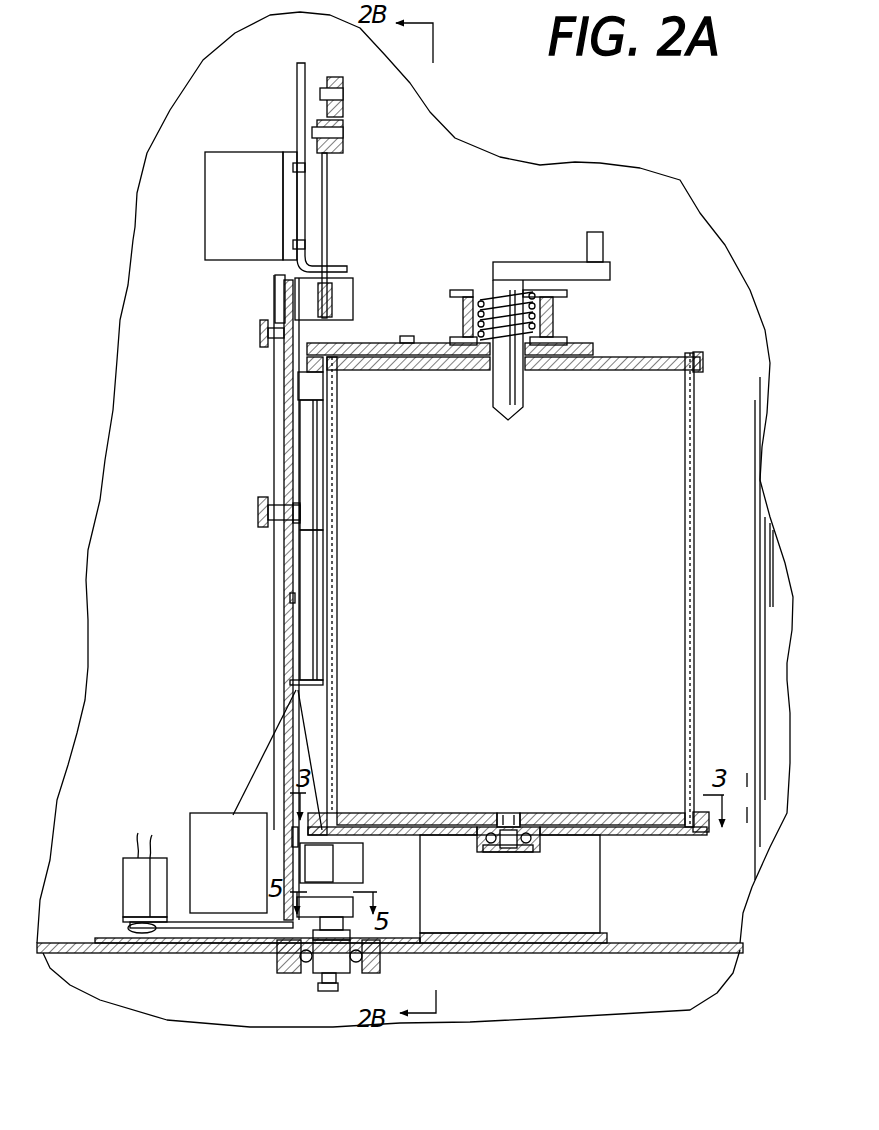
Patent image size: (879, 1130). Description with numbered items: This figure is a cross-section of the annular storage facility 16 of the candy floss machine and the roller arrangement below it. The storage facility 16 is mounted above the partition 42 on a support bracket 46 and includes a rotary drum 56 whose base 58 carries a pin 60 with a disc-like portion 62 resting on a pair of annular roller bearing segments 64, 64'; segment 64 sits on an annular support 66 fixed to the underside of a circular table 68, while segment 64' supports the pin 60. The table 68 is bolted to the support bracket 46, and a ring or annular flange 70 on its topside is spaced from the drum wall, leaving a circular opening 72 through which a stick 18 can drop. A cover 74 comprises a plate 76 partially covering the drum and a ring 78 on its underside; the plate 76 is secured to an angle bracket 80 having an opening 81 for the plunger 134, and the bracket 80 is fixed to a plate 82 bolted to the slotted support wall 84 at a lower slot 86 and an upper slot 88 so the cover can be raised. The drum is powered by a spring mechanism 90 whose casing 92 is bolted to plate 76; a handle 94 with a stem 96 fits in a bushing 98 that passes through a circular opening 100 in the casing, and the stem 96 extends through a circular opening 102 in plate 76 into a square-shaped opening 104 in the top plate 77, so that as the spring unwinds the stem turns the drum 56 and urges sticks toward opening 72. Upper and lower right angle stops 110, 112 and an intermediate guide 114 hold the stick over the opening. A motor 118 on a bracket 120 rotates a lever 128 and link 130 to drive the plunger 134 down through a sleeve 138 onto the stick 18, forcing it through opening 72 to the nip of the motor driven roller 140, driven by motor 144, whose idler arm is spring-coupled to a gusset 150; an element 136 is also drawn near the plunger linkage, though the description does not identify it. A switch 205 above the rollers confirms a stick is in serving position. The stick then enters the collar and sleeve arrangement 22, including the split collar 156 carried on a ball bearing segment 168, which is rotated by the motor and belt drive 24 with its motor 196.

The annular storage facility 16 is at (657, 212).
The stick 18 is at (330, 723).
The collar and sleeve arrangement 22 is at (348, 891).
The motor and belt drive 24 is at (232, 951).
The partition 42 is at (620, 943).
The support bracket 46 is at (580, 880).
The rotary drum 56 is at (695, 530).
The base 58 is at (327, 816).
The pin 60 is at (507, 828).
The disc-like portion 62 is at (500, 826).
The annular roller bearing segment 64 is at (468, 854).
The annular roller bearing segment 64' is at (516, 863).
The annular support 66 is at (492, 853).
The circular table 68 is at (620, 828).
The ring or annular flange 70 is at (695, 833).
The circular opening 72 is at (368, 832).
The cover 74 is at (398, 305).
The plate 76 is at (378, 361).
The top plate 77 is at (640, 372).
The ring 78 is at (307, 366).
The angle bracket 80 is at (405, 343).
The opening 81 is at (328, 345).
The plate 82 is at (300, 491).
The slotted support wall 84 is at (293, 573).
The lower slot 86 is at (293, 479).
The upper slot 88 is at (285, 293).
The spring mechanism 90 is at (487, 226).
The casing 92 is at (568, 302).
The handle 94 is at (573, 258).
The stem 96 is at (505, 281).
The bushing 98 is at (535, 290).
The circular opening 100 is at (470, 358).
The circular opening 102 is at (483, 363).
The square-shaped opening 104 is at (488, 386).
The upper right angle stop 110 is at (322, 441).
The lower right angle stop 112 is at (323, 695).
The guide 114 is at (313, 611).
The motor 118 is at (215, 193).
The bracket 120 is at (298, 106).
The lever 128 is at (333, 77).
The link 130 is at (343, 112).
The plunger 134 is at (327, 189).
The bracket 136 is at (320, 270).
The sleeve 138 is at (333, 297).
The motor driven roller 140 is at (318, 859).
The motor 144 is at (230, 829).
The gusset 150 is at (297, 693).
The split collar 156 is at (290, 924).
The ball bearing segment 168 is at (375, 961).
The motor 196 is at (123, 898).
The switch 205 is at (295, 833).